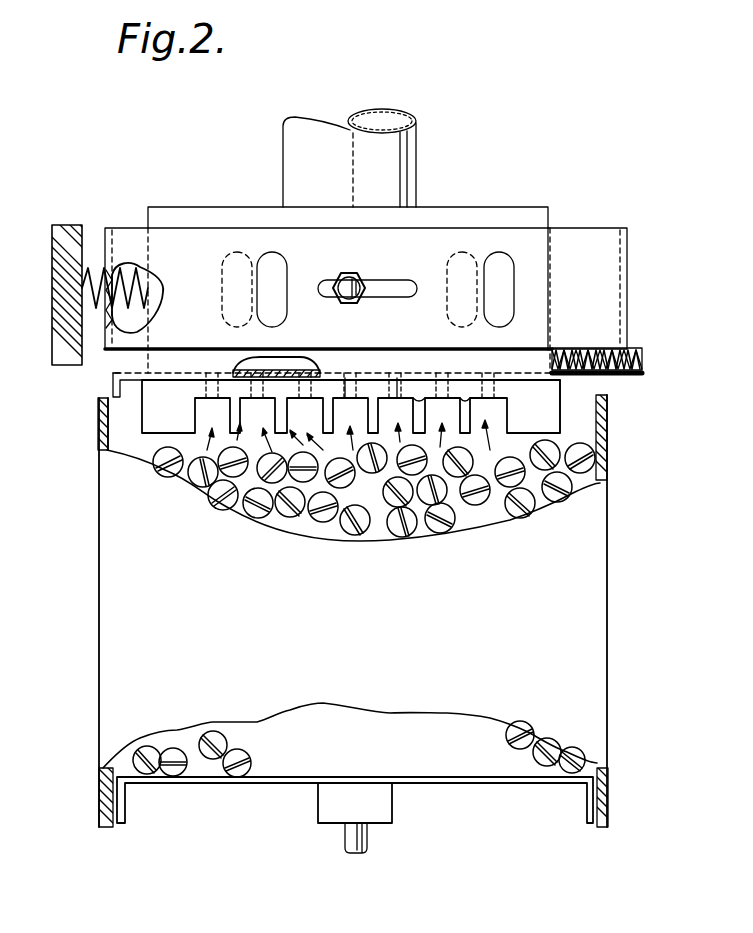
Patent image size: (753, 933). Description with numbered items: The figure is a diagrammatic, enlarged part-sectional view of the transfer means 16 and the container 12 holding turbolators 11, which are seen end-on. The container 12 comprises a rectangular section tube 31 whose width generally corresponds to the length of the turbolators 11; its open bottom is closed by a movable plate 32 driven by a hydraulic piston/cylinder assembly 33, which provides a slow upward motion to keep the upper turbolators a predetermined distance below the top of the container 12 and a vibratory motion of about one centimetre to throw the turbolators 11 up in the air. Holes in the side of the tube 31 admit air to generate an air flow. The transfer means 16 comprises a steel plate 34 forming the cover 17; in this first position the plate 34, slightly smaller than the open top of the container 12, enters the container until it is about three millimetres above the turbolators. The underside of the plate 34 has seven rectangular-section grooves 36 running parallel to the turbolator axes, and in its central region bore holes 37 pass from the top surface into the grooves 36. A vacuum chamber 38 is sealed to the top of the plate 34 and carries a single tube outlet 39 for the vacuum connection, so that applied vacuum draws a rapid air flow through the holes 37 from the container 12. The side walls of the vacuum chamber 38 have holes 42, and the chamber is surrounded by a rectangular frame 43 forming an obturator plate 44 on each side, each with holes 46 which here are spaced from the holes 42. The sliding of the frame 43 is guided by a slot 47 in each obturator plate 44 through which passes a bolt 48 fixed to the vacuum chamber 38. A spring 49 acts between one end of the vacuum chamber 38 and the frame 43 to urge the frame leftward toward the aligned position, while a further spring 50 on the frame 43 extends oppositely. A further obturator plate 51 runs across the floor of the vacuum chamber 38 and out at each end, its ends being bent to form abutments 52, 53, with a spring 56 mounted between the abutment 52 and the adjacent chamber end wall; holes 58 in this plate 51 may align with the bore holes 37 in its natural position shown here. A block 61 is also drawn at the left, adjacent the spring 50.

The turbolators 11 is at (208, 498).
The container 12 is at (614, 658).
The transfer means 16 is at (568, 210).
The cover 17 is at (537, 397).
The rectangular section tube 31 is at (587, 590).
The movable plate 32 is at (480, 778).
The hydraulic piston/cylinder assembly 33 is at (350, 805).
The plate 34 is at (520, 390).
The grooves 36 is at (465, 397).
The bore holes 37 is at (397, 380).
The vacuum chamber 38 is at (473, 215).
The single tube outlet 39 is at (397, 153).
The holes 42 is at (225, 250).
The rectangular frame 43 is at (637, 273).
The obturator plate 44 is at (527, 240).
The holes 46 is at (267, 253).
The slot 47 is at (397, 282).
The bolt 48 is at (348, 277).
The spring 49 is at (122, 262).
The further spring 50 is at (87, 310).
The further obturator plate 51 is at (130, 377).
The abutment 52 is at (643, 360).
The abutment 53 is at (112, 390).
The spring 56 is at (617, 378).
The holes 58 is at (303, 370).
The stop block 61 is at (83, 237).